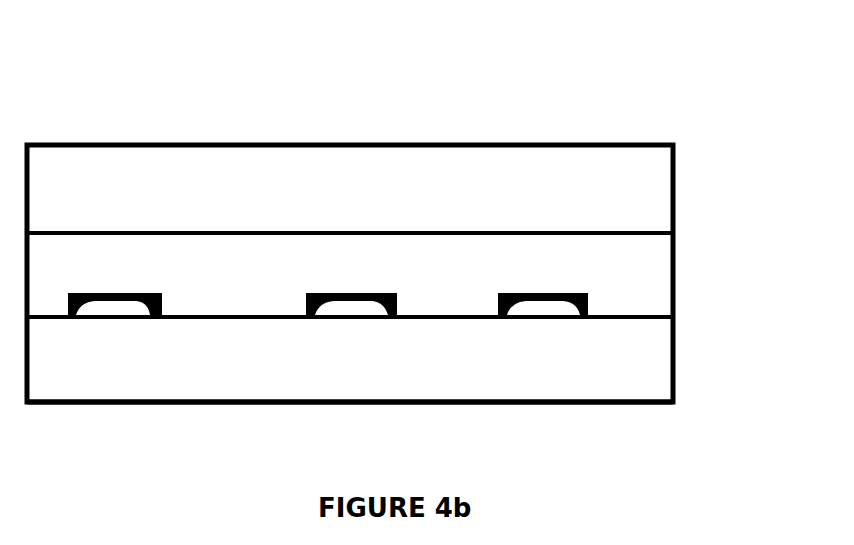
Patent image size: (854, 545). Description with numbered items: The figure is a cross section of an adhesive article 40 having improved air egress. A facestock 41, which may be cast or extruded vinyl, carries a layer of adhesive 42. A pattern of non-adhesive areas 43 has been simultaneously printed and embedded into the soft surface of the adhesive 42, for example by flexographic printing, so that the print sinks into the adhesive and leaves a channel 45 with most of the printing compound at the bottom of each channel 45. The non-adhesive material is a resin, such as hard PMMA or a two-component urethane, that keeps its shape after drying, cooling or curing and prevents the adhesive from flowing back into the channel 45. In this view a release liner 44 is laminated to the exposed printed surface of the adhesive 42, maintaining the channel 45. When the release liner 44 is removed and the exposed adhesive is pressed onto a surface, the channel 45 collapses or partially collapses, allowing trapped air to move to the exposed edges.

The adhesive article 40 is at (113, 115).
The facestock 41 is at (675, 192).
The adhesive 42 is at (675, 275).
The non-adhesive areas 43 is at (525, 302).
The release liner 44 is at (675, 360).
The channel 45 is at (553, 310).